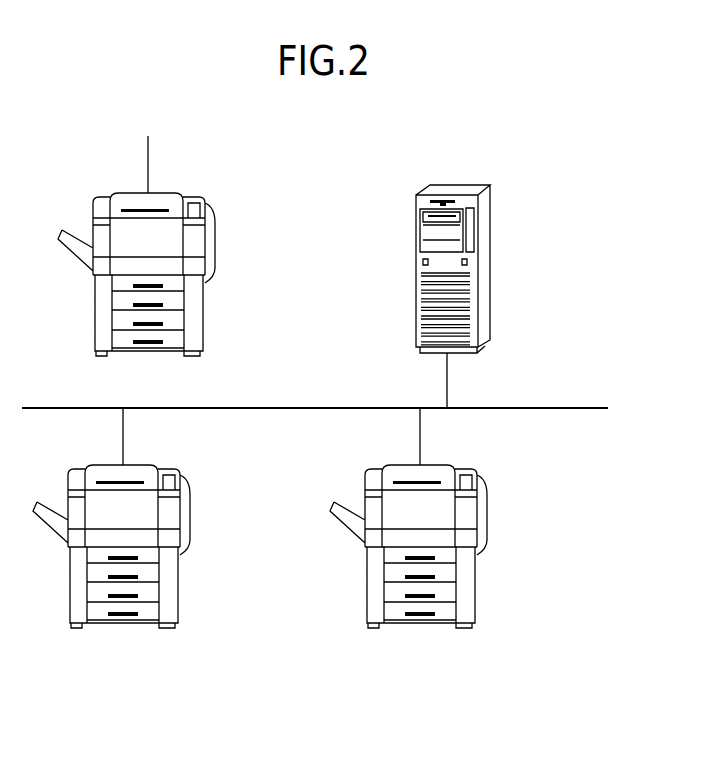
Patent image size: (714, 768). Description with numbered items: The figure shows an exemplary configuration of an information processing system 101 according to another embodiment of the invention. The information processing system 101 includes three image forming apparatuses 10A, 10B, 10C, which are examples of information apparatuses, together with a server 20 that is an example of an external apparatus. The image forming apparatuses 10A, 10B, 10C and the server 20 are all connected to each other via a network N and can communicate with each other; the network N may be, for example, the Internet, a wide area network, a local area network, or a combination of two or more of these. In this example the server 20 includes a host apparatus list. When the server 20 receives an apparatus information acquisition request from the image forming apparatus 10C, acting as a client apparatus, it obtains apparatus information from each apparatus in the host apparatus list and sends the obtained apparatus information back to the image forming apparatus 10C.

The information processing system 101 is at (591, 157).
The image forming apparatus 10A is at (173, 246).
The image forming apparatus 10B is at (148, 518).
The image forming apparatus 10C is at (446, 518).
The server 20 is at (490, 234).
The network N is at (545, 408).